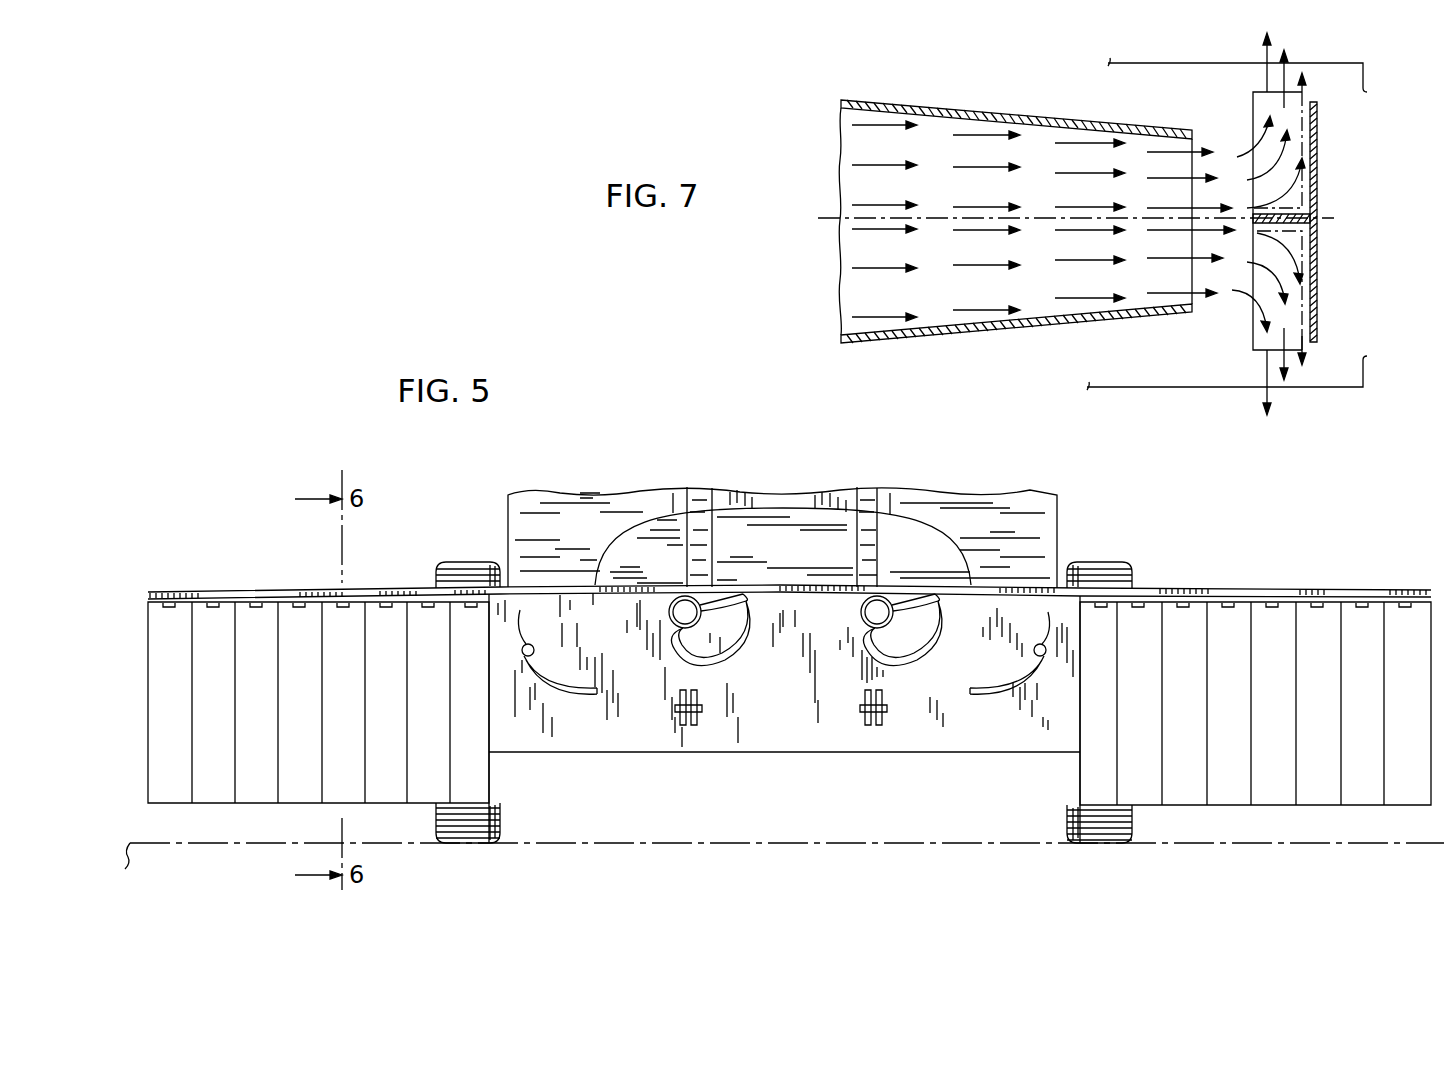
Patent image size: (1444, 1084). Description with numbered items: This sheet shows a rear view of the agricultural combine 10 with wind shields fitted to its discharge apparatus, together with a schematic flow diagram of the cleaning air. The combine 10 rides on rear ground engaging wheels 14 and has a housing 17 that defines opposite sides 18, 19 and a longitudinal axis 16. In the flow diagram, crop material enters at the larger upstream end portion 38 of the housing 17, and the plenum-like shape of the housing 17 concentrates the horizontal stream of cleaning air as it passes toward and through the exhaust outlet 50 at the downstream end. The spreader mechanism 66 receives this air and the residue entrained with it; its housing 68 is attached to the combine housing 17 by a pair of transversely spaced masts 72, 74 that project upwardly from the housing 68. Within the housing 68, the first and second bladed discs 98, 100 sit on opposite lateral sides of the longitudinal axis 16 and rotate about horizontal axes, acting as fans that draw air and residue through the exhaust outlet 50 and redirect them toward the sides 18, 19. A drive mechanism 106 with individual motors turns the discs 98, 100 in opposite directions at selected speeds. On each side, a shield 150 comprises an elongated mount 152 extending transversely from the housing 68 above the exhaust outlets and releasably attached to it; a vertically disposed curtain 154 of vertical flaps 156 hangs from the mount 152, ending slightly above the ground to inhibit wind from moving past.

In FIG. 5, the combine 10 is at (1088, 506).
In FIG. 5, the rear ground engaging wheels 14 is at (483, 565).
In FIG. 7, the longitudinal axis 16 is at (975, 220).
In FIG. 7, the housing 17 is at (1140, 63).
In FIG. 7, the side 18 is at (1228, 387).
In FIG. 5, the side 18 is at (508, 583).
In FIG. 7, the side 19 is at (1207, 63).
In FIG. 5, the side 19 is at (1063, 493).
In FIG. 7, the upstream end portion 38 is at (841, 118).
In FIG. 7, the exhaust outlet 50 is at (1172, 312).
In FIG. 7, the spreader mechanism 66 is at (1320, 211).
In FIG. 5, the spreader mechanism 66 is at (683, 758).
In FIG. 7, the housing 68 is at (1318, 146).
In FIG. 5, the housing 68 is at (796, 756).
In FIG. 5, the mast 72 is at (700, 488).
In FIG. 5, the mast 74 is at (868, 488).
In FIG. 7, the first bladed disc 98 is at (1253, 340).
In FIG. 7, the second bladed disc 100 is at (1253, 120).
In FIG. 5, the drive mechanism 106 is at (867, 637).
In FIG. 5, the shield 150 is at (287, 582).
In FIG. 5, the elongated mount 152 is at (400, 591).
In FIG. 5, the curtain 154 is at (254, 808).
In FIG. 5, the vertical flaps 156 is at (345, 780).